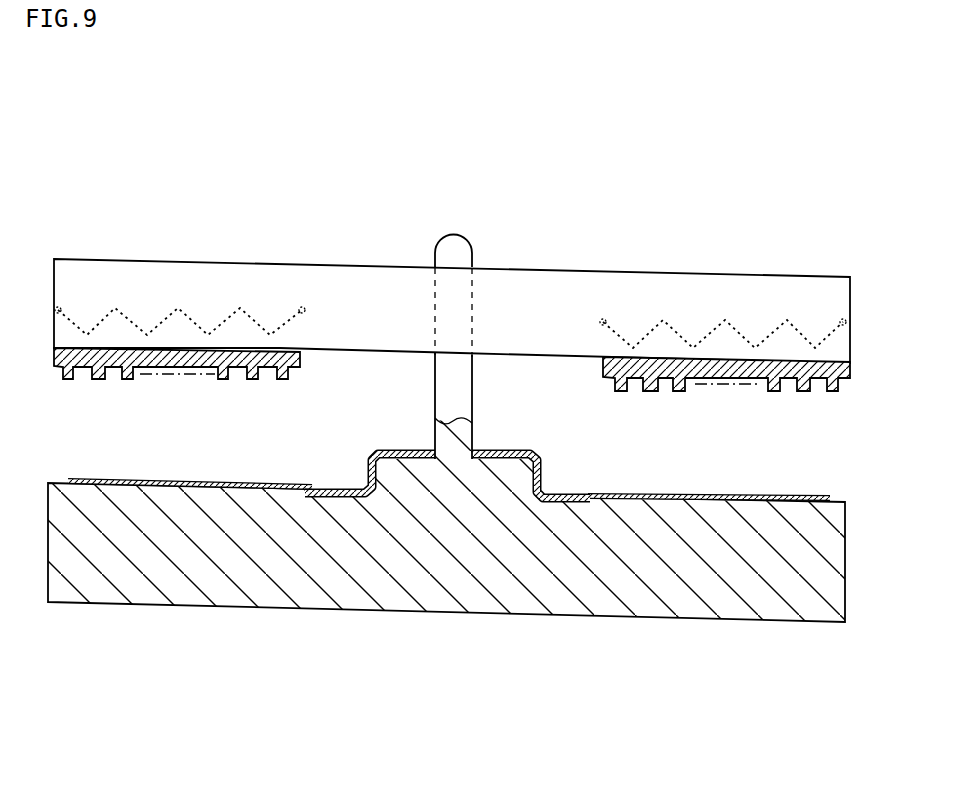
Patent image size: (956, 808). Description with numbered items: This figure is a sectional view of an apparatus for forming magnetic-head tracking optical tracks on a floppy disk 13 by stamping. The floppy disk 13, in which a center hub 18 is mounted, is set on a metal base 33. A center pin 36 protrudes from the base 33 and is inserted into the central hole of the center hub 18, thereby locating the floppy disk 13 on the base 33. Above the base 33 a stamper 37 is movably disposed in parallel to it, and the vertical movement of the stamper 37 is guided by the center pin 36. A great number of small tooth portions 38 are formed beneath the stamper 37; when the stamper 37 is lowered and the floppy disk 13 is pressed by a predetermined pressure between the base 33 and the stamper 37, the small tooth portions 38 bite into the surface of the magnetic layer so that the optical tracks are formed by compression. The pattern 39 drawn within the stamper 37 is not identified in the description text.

The floppy disk 13 is at (705, 493).
The center hub 18 is at (526, 457).
The metal base 33 is at (553, 605).
The center pin 36 is at (440, 390).
The stamper 37 is at (790, 283).
The small tooth portions 38 is at (832, 392).
The zigzag spring element 39 is at (178, 308).